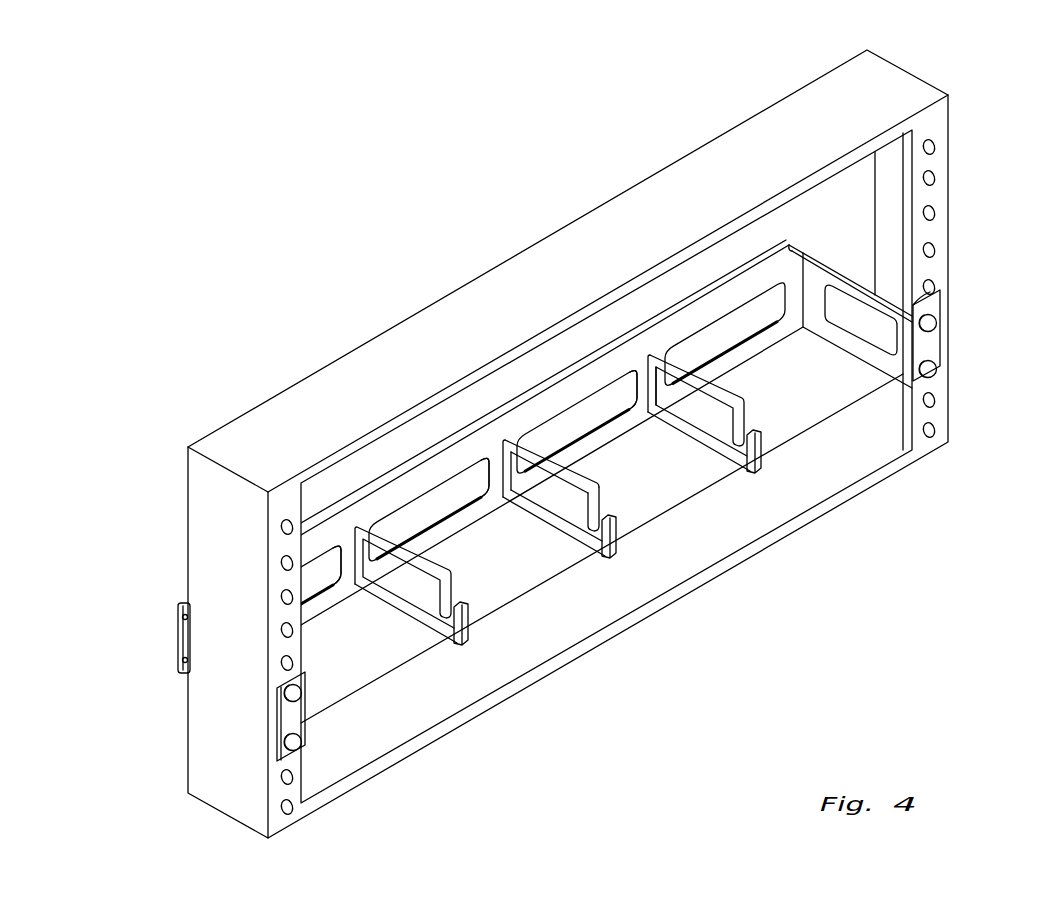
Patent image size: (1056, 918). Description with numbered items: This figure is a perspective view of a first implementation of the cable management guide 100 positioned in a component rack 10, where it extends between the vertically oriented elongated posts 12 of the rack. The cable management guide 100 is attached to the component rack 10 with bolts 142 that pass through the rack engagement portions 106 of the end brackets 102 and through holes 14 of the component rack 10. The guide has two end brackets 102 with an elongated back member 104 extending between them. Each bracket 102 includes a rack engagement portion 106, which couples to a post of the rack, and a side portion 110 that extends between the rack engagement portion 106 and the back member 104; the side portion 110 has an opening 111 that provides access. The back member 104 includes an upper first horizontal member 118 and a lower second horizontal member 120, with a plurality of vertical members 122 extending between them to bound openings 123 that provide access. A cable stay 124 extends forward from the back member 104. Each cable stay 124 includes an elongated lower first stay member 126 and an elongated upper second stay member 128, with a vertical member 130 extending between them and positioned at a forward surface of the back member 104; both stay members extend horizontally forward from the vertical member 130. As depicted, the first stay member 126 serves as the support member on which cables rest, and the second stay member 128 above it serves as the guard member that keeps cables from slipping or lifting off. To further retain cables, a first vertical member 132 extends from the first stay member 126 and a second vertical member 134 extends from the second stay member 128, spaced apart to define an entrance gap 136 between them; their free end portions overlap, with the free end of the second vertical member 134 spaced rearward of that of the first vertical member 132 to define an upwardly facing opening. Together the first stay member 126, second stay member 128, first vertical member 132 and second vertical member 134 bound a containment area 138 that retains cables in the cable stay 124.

The component rack 10 is at (388, 254).
The posts 12 is at (212, 517).
The holes 14 is at (282, 564).
The cable management guide 100 is at (794, 406).
The end brackets 102 is at (856, 240).
The back member 104 is at (525, 403).
The rack engagement portion 106 is at (290, 722).
The side portion 110 is at (850, 285).
The opening 111 is at (857, 332).
The first horizontal member 118 is at (735, 290).
The second horizontal member 120 is at (765, 357).
The vertical members 122 is at (630, 372).
The openings 123 is at (765, 312).
The cable stay 124 is at (605, 538).
The first stay member 126 is at (554, 560).
The second stay member 128 is at (580, 460).
The vertical member 130 is at (650, 366).
The first vertical member 132 is at (650, 538).
The second vertical member 134 is at (586, 474).
The entrance gap 136 is at (592, 515).
The containment area 138 is at (538, 524).
The bolts 142 is at (300, 690).